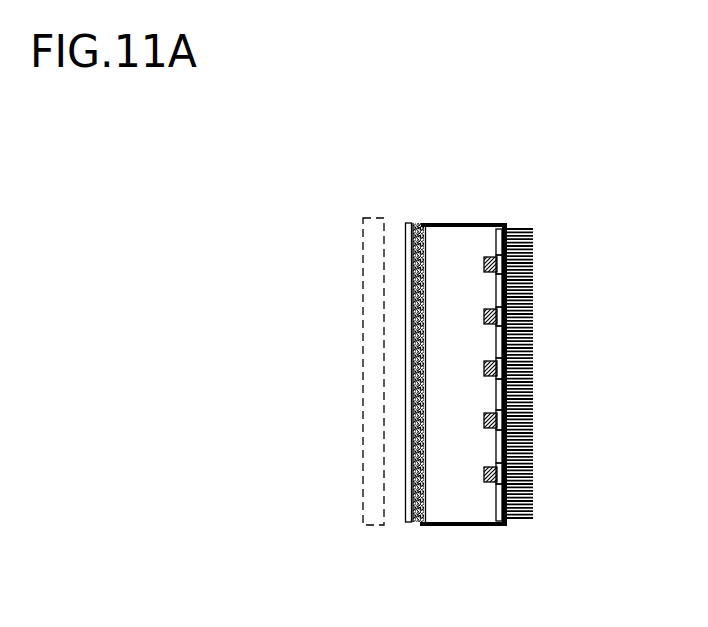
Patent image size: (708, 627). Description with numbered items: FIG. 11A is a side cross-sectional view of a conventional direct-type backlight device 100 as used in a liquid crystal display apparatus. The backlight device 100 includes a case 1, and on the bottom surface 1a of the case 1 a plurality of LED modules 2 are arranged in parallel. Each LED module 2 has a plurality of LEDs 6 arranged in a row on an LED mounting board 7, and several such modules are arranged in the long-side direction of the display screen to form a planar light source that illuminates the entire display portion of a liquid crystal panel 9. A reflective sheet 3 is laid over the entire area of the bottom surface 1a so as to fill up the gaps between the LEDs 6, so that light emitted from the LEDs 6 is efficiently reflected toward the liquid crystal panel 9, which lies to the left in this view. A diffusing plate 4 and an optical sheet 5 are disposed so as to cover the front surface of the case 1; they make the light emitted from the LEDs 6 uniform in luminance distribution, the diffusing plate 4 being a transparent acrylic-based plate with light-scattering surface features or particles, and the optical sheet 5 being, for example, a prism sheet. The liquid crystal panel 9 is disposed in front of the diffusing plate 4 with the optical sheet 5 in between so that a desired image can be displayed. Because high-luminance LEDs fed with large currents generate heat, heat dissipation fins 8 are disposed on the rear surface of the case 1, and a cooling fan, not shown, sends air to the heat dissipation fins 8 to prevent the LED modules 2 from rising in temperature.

The backlight device 100 is at (558, 272).
The case 1 is at (478, 527).
The bottom surface 1a is at (493, 447).
The LED module 2 is at (492, 163).
The reflective sheet 3 is at (492, 285).
The diffusing plate 4 is at (419, 522).
The optical sheet 5 is at (405, 517).
The LED 6 is at (480, 265).
The LED mounting board 7 is at (498, 231).
The heat dissipation fins 8 is at (533, 373).
The liquid crystal panel 9 is at (362, 303).